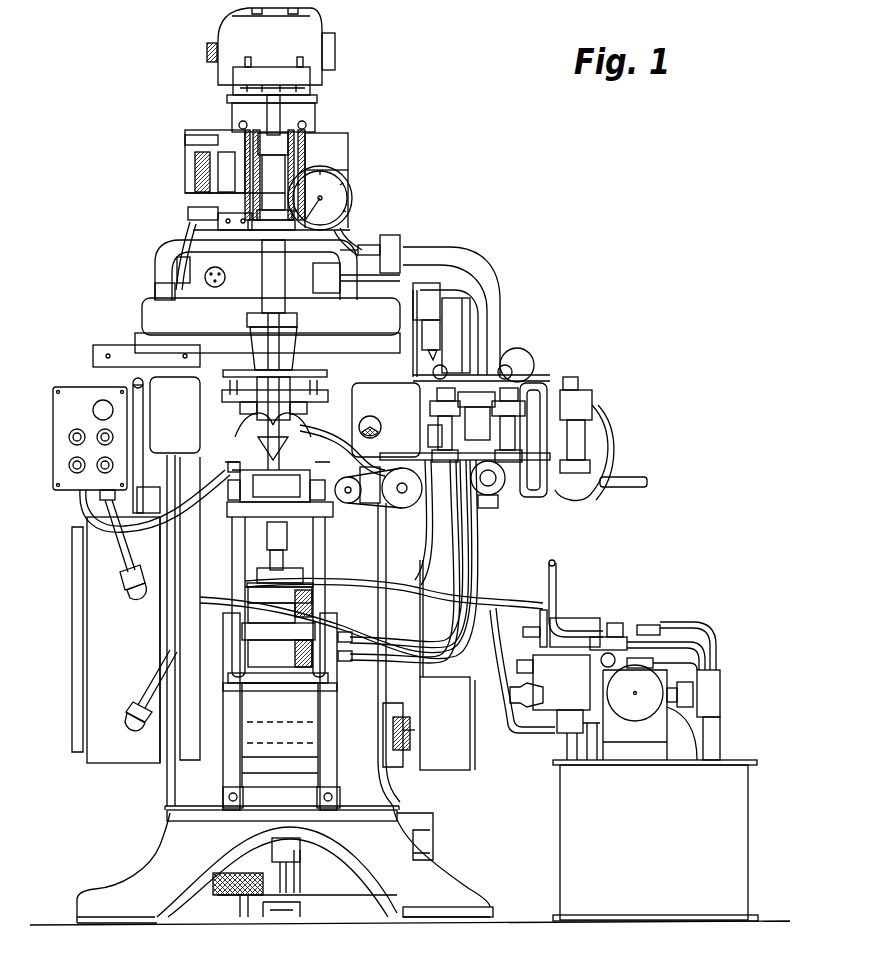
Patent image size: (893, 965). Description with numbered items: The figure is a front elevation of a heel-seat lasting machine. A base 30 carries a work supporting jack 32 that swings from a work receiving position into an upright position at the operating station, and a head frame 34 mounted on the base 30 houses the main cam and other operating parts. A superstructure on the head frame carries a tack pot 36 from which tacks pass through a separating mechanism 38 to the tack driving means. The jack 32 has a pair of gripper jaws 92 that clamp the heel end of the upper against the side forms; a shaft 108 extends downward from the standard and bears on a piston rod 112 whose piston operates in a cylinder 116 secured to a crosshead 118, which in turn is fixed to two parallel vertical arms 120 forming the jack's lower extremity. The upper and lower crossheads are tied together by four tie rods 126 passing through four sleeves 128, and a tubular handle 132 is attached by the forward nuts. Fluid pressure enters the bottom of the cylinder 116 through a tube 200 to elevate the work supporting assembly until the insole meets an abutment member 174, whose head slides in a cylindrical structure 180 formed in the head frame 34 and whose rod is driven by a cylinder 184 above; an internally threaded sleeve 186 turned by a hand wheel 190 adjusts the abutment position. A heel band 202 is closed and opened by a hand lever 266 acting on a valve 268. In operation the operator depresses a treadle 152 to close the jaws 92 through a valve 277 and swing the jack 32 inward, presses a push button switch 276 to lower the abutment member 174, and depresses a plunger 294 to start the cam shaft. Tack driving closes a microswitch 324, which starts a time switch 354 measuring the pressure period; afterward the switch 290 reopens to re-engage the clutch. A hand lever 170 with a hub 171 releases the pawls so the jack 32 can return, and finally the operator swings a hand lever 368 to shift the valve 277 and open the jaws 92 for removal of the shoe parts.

The base 30 is at (190, 743).
The work supporting jack 32 is at (186, 606).
The head frame 34 is at (360, 238).
The tack pot 36 is at (320, 90).
The separating mechanism 38 is at (310, 97).
The gripper jaws 92 is at (258, 413).
The shaft 108 is at (265, 532).
The piston rod 112 is at (270, 560).
The cylinder 116 is at (272, 622).
The crosshead 118 is at (247, 504).
The vertical arms 120 is at (233, 773).
The tie rods 126 is at (235, 476).
The sleeves 128 is at (237, 583).
The tubular handle 132 is at (370, 515).
The treadle 152 is at (233, 895).
The hand lever 170 is at (138, 422).
The hub 171 is at (143, 495).
The abutment member 174 is at (300, 357).
The cylindrical structure 180 is at (273, 267).
The cylinder 184 is at (286, 178).
The internally threaded sleeve 186 is at (318, 118).
The hand wheel 190 is at (273, 83).
The tube 200 is at (186, 606).
The heel band 202 is at (267, 375).
The hand lever 266 is at (534, 362).
The valve 268 is at (510, 365).
The push button switch 276 is at (100, 405).
The valve 277 is at (433, 432).
The switch 290 is at (317, 522).
The plunger 294 is at (377, 410).
The microswitch 324 is at (235, 215).
The time switch 354 is at (392, 233).
The hand lever 368 is at (445, 366).